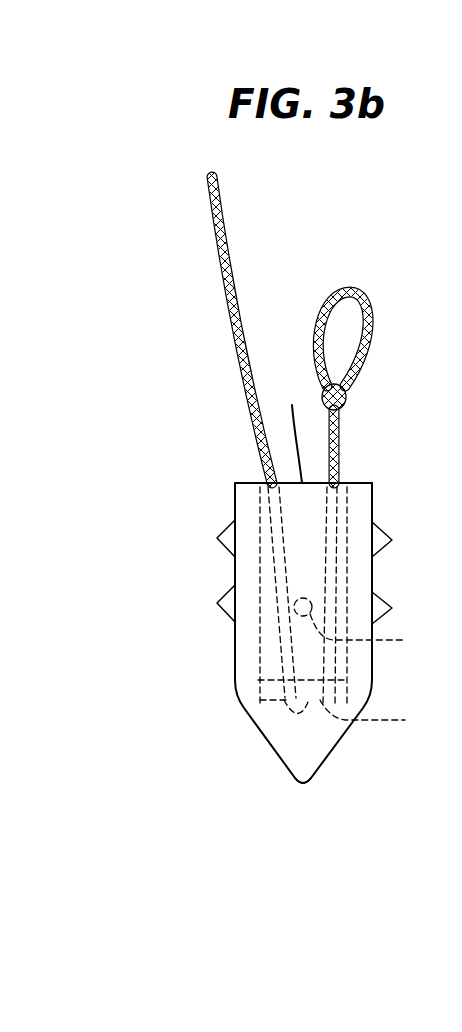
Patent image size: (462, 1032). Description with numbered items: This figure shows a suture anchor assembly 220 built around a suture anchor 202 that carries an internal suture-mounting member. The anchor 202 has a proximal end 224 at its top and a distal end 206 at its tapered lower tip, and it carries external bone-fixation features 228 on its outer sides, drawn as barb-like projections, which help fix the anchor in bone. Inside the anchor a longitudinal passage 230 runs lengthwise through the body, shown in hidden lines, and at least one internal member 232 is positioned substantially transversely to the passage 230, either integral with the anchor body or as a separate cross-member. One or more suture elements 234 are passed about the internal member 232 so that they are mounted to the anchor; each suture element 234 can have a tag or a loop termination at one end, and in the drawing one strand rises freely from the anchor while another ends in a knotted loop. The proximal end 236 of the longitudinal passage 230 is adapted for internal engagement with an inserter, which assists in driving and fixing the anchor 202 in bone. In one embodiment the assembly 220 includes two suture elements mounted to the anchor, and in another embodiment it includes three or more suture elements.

The suture anchor assembly 220 is at (300, 248).
The anchor 202 is at (234, 663).
The distal end 206 is at (285, 782).
The proximal end 224 is at (233, 481).
The external bone-fixation features 228 is at (222, 546).
The longitudinal passage 230 is at (258, 571).
The internal member 232 is at (356, 513).
The suture element 234 is at (228, 257).
The proximal end of the longitudinal passage 236 is at (296, 432).